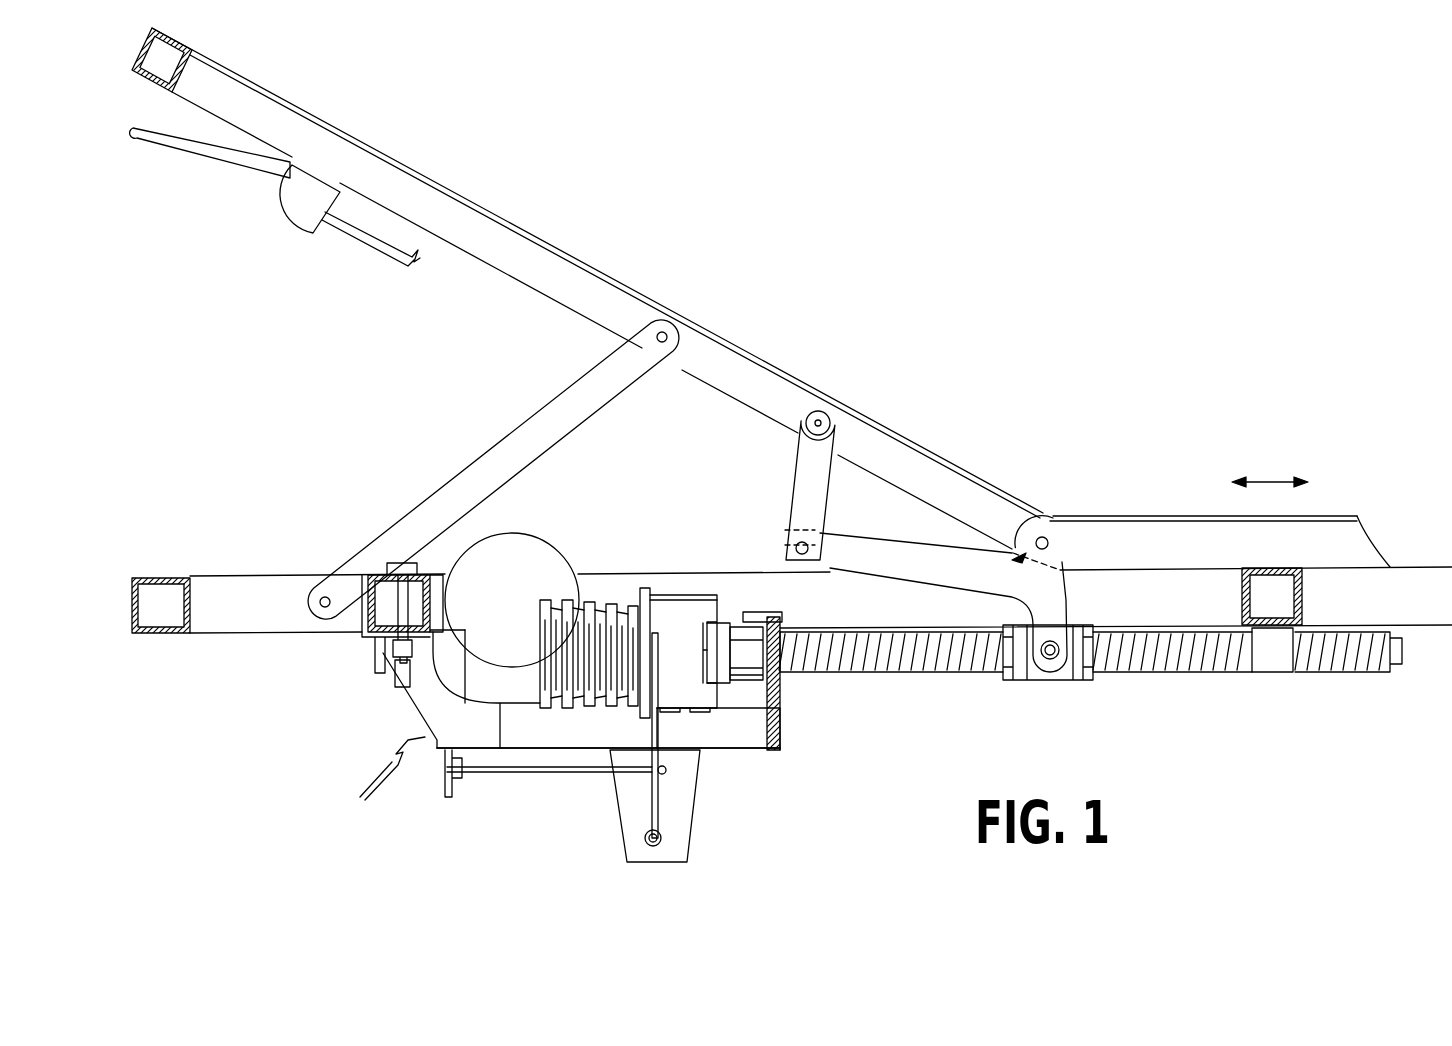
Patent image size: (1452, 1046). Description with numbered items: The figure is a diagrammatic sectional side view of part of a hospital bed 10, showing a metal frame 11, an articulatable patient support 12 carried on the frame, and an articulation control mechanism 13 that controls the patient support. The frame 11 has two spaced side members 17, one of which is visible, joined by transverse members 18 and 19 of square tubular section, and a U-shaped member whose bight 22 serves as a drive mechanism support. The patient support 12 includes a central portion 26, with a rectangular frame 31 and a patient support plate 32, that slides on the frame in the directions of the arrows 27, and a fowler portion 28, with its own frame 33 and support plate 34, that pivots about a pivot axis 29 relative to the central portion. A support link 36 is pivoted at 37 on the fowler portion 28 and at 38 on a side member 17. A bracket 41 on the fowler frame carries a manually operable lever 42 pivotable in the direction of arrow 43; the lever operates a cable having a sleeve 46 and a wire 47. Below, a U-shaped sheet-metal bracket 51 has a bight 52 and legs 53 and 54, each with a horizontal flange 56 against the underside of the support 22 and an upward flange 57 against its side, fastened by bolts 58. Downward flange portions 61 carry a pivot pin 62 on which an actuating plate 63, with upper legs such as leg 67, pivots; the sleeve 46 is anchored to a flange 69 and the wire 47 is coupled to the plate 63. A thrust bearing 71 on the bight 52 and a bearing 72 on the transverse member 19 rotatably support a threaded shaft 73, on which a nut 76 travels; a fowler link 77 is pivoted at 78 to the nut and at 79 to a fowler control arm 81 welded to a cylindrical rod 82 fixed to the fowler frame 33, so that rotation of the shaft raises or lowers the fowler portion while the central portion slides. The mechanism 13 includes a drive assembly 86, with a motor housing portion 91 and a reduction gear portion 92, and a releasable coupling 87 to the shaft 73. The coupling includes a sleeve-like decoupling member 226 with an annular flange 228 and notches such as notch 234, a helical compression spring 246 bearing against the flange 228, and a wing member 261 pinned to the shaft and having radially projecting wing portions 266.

The hospital bed 10 is at (1115, 328).
The frame 11 is at (808, 561).
The articulatable patient support 12 is at (1063, 465).
The articulation control mechanism 13 is at (800, 774).
The side member 17 is at (260, 592).
The transverse member 18 is at (130, 606).
The transverse member 19 is at (1305, 597).
The bight 22 is at (369, 578).
The central portion 26 is at (1168, 512).
The arrows 27 is at (1278, 478).
The fowler portion 28 is at (570, 248).
The pivot axis 29 is at (1045, 538).
The frame 31 is at (1345, 540).
The patient support plate 32 is at (1342, 520).
The frame 33 is at (580, 290).
The support plate 34 is at (630, 284).
The support link 36 is at (477, 480).
The pivot 37 is at (655, 338).
The pivot 38 is at (323, 598).
The bracket 41 is at (300, 203).
The manually operable lever 42 is at (150, 145).
The arrow 43 is at (180, 132).
The sleeve 46 is at (355, 225).
The wire 47 is at (537, 775).
The U-shaped bracket 51 is at (736, 760).
The bight 52 is at (783, 726).
The leg 53 is at (783, 745).
The leg 54 is at (437, 708).
The horizontal flange 56 is at (390, 652).
The flange 57 is at (367, 608).
The bolt 58 is at (403, 562).
The flange portion 61 is at (682, 820).
The pivot pin 62 is at (659, 848).
The actuating plate 63 is at (650, 812).
The leg 67 is at (697, 600).
The flange 69 is at (445, 795).
The thrust bearing 71 is at (770, 612).
The bearing 72 is at (1278, 652).
The threaded shaft 73 is at (872, 670).
The nut 76 is at (1042, 683).
The fowler link 77 is at (928, 563).
The pivot 78 is at (1057, 660).
The pivot 79 is at (790, 540).
The fowler control arm 81 is at (784, 490).
The cylindrical rod 82 is at (822, 418).
The drive assembly 86 is at (565, 522).
The releasable coupling 87 is at (628, 582).
The housing portion 91 is at (515, 553).
The housing portion 92 is at (518, 700).
The decoupling member 226 is at (664, 598).
The annular flange 228 is at (650, 717).
The notch 234 is at (712, 620).
The helical compression spring 246 is at (622, 600).
The wing member 261 is at (733, 690).
The wing portion 266 is at (750, 642).